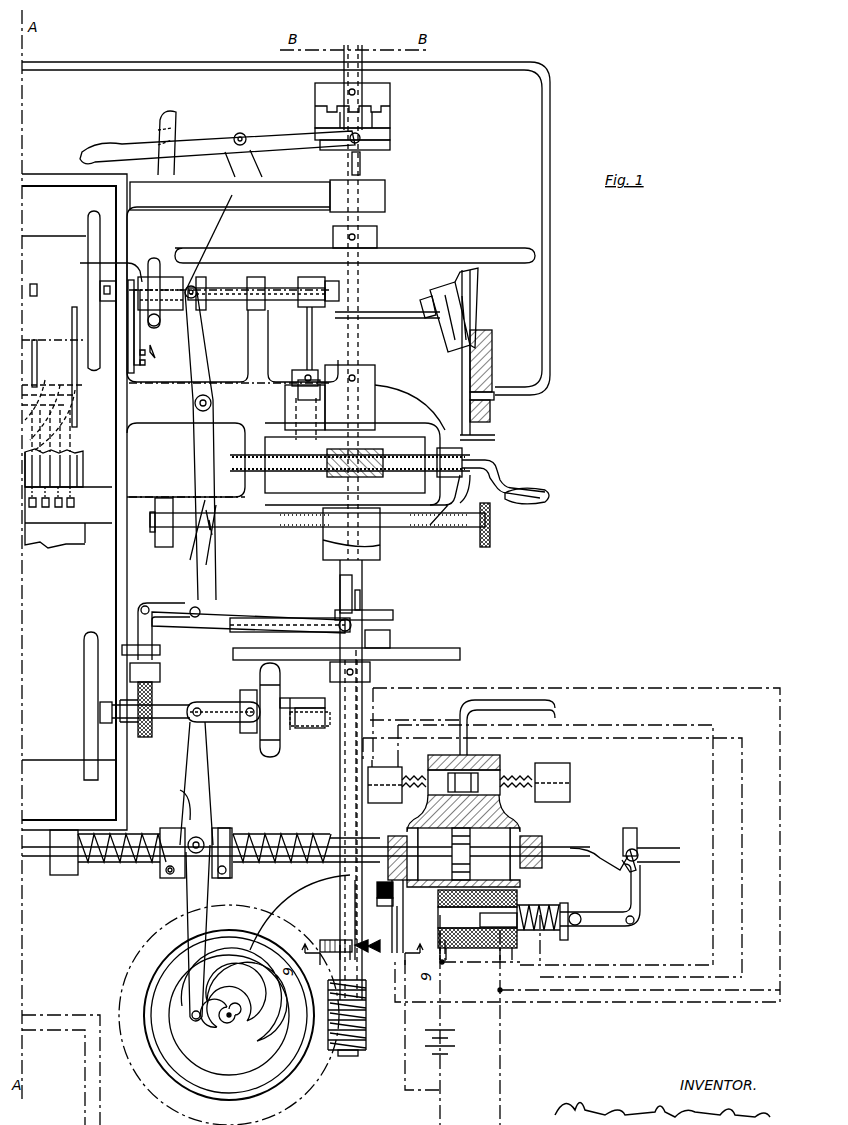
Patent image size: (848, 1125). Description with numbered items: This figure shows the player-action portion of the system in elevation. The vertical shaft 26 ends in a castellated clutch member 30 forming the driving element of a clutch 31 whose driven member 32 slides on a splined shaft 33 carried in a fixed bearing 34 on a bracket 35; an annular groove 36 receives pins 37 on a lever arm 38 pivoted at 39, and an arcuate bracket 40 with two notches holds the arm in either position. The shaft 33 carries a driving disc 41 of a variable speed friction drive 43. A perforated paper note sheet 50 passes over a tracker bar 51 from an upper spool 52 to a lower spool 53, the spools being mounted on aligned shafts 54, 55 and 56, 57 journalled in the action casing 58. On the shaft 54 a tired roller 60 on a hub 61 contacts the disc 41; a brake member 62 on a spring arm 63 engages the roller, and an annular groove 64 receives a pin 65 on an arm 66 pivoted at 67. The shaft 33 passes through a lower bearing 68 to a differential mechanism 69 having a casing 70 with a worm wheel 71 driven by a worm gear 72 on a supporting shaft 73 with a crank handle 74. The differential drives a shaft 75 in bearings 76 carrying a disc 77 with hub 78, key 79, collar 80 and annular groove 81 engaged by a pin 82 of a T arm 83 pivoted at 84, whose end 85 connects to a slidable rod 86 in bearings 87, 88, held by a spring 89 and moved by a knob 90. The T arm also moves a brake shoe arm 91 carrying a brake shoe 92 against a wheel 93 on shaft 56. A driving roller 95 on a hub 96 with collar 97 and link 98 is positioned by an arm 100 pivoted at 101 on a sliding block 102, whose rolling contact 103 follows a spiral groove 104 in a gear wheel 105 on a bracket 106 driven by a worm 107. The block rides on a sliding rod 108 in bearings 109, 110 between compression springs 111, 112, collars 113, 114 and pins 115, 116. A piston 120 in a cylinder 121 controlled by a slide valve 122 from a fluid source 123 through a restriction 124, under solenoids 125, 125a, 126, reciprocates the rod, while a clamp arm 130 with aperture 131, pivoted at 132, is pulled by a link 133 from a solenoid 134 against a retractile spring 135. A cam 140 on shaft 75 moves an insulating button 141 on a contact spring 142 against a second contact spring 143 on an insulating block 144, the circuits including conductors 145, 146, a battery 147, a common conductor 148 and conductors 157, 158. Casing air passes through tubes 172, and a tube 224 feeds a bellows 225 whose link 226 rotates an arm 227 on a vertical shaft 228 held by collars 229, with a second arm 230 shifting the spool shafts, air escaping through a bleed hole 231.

The vertical shaft 26 is at (360, 52).
The castellated clutch member 30 is at (390, 90).
The clutch 31 is at (390, 108).
The second castellated member 32 is at (390, 118).
The splined shaft 33 is at (362, 170).
The fixed bearing 34 is at (385, 198).
The bracket 35 is at (270, 203).
The annular groove 36 is at (378, 135).
The pins 37 is at (348, 144).
The lever arm 38 is at (200, 148).
The pivot 39 is at (243, 130).
The arcuate bracket 40 is at (170, 110).
The driving disc 41 is at (455, 250).
The variable speed friction drive 43 is at (232, 352).
The perforated paper note sheet 50 is at (83, 458).
The tracker bar 51 is at (90, 518).
The upper spool 52 is at (92, 222).
The lower spool 53 is at (84, 778).
The shaft 54 is at (232, 287).
The shaft 55 is at (98, 284).
The shaft 56 is at (180, 700).
The shaft 57 is at (98, 723).
The action casing 58 is at (72, 179).
The roller 60 is at (160, 270).
The hub 61 is at (175, 300).
The brake member 62 is at (86, 273).
The spring arm 63 is at (138, 333).
The annular groove 64 is at (209, 243).
The pin 65 is at (200, 312).
The arm 66 is at (182, 365).
The pivot 67 is at (211, 403).
The lower bearing 68 is at (375, 392).
The differential mechanism 69 is at (345, 465).
The casing 70 is at (427, 440).
The worm wheel 71 is at (412, 462).
The worm gear 72 is at (330, 450).
The supporting shaft 73 is at (500, 462).
The crank handle 74 is at (535, 500).
The shaft 75 is at (360, 603).
The bearings 76 is at (340, 582).
The disc 77 is at (448, 648).
The hub 78 is at (390, 640).
The key 79 is at (352, 582).
The collar 80 is at (370, 672).
The annular groove 81 is at (355, 622).
The pin 82 is at (290, 635).
The T arm 83 is at (245, 615).
The pivot 84 is at (200, 620).
The end 85 is at (230, 560).
The slidable rod 86 is at (273, 514).
The bearing 87 is at (168, 486).
The bearing 88 is at (372, 540).
The spring 89 is at (466, 490).
The knob 90 is at (490, 528).
The brake shoe arm 91 is at (152, 633).
The brake shoe 92 is at (160, 670).
The wheel 93 is at (145, 740).
The driving roller 95 is at (283, 755).
The hub 96 is at (262, 750).
The collar 97 is at (252, 678).
The link 98 is at (225, 722).
The arm 100 is at (224, 785).
The pivot 101 is at (198, 855).
The sliding block 102 is at (170, 790).
The rolling contact 103 is at (200, 1022).
The spiral groove 104 is at (165, 1000).
The gear wheel 105 is at (305, 1053).
The bracket 106 is at (290, 895).
The worm 107 is at (360, 1053).
The sliding rod 108 is at (112, 840).
The bearing 109 is at (64, 870).
The bearing 110 is at (330, 868).
The compression spring 111 is at (75, 880).
The compression spring 112 is at (255, 836).
The collar 113 is at (165, 880).
The collar 114 is at (228, 826).
The pins 115 is at (170, 878).
The pins 116 is at (222, 876).
The piston 120 is at (470, 838).
The cylinder 121 is at (485, 898).
The slide valve 122 is at (478, 760).
The source of expansible fluid 123 is at (550, 702).
The restriction 124 is at (457, 730).
The solenoid 125 is at (385, 796).
The contact 125a is at (410, 775).
The solenoid 126 is at (548, 763).
The arm 130 is at (630, 828).
The aperture 131 is at (620, 870).
The pivot 132 is at (638, 850).
The link 133 is at (605, 928).
The electric solenoid 134 is at (488, 970).
The retractile spring 135 is at (540, 932).
The cam 140 is at (340, 933).
The insulating button 141 is at (372, 952).
The contact spring 142 is at (352, 920).
The second contact spring 143 is at (405, 920).
The block 144 is at (383, 886).
The conductor 145 is at (423, 726).
The conductor 146 is at (410, 1010).
The battery 147 is at (455, 1050).
The common conductor 148 is at (458, 962).
The conductor 157 is at (70, 1018).
The conductor 158 is at (75, 1028).
The tubes 172 is at (60, 410).
The tube 224 is at (552, 310).
The bellows 225 is at (475, 295).
The link 226 is at (400, 300).
The arm 227 is at (335, 272).
The vertical shaft 228 is at (298, 330).
The collars 229 is at (300, 356).
The second arm 230 is at (334, 735).
The bleed hole 231 is at (492, 350).